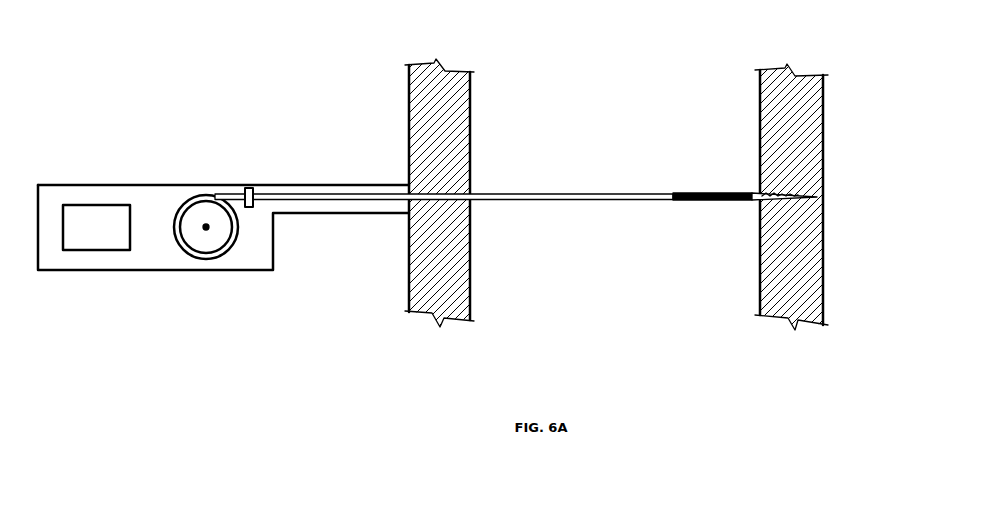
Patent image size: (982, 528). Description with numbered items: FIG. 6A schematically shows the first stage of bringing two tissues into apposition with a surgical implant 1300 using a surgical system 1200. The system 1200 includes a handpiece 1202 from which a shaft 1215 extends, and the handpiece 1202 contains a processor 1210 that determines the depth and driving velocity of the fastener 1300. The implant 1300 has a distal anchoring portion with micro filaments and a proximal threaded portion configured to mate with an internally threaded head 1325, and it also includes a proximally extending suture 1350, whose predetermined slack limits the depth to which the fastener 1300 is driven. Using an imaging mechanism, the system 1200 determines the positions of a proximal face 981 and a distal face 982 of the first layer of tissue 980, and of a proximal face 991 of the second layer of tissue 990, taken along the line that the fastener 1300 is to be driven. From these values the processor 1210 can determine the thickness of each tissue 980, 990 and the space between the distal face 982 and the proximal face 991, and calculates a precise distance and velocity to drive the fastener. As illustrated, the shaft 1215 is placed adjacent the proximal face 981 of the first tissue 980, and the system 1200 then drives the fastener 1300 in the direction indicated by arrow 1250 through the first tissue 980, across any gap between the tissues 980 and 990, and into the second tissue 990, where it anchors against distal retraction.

The surgical system 1200 is at (128, 128).
The handpiece 1202 is at (200, 184).
The processor 1210 is at (96, 227).
The shaft 1215 is at (207, 258).
The internally threaded head 1325 is at (249, 188).
The suture 1350 is at (600, 202).
The surgical implant 1300 is at (760, 222).
The arrow 1250 is at (523, 87).
The first layer of tissue 980 is at (432, 137).
The proximal face of the first tissue 981 is at (402, 275).
The distal face of the first tissue 982 is at (477, 275).
The second layer of tissue 990 is at (775, 158).
The proximal face of the second tissue 991 is at (754, 289).